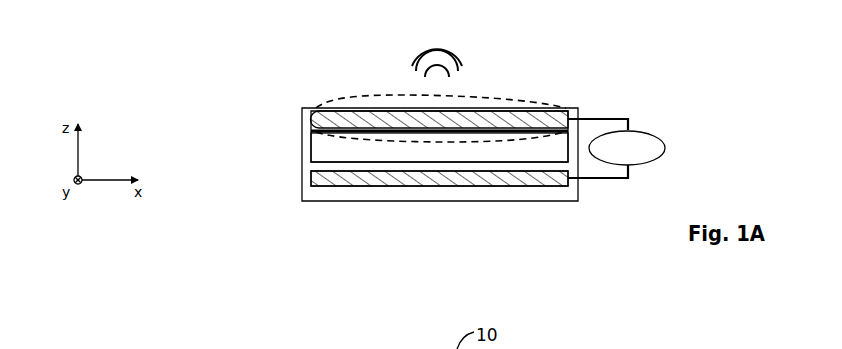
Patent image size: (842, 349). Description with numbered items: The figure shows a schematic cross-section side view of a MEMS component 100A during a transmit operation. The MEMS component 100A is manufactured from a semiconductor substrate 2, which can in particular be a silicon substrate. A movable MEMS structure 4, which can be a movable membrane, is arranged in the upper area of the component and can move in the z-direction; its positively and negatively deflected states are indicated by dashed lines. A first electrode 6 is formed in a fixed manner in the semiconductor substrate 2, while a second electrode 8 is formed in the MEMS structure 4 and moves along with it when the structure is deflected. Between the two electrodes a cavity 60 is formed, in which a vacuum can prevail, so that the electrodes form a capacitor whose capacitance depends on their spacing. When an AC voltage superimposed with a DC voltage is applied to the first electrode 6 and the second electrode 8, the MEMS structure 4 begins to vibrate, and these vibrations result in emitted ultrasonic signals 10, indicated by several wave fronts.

The MEMS component 100A is at (288, 77).
The semiconductor substrate 2 is at (357, 195).
The movable MEMS structure 4 is at (524, 106).
The first electrode 6 is at (485, 180).
The second electrode 8 is at (343, 118).
The ultrasonic signals 10 is at (440, 52).
The cavity 60 is at (320, 148).